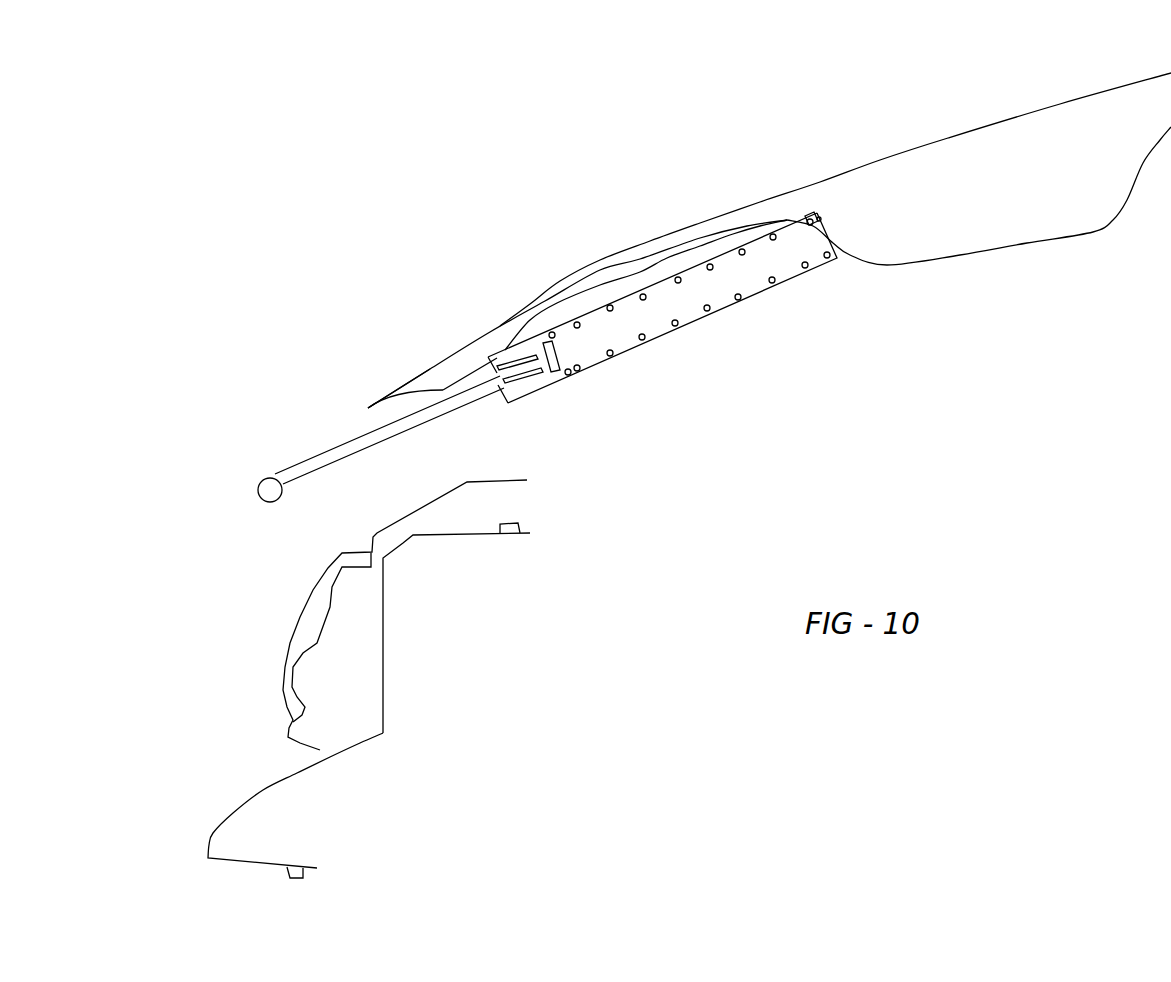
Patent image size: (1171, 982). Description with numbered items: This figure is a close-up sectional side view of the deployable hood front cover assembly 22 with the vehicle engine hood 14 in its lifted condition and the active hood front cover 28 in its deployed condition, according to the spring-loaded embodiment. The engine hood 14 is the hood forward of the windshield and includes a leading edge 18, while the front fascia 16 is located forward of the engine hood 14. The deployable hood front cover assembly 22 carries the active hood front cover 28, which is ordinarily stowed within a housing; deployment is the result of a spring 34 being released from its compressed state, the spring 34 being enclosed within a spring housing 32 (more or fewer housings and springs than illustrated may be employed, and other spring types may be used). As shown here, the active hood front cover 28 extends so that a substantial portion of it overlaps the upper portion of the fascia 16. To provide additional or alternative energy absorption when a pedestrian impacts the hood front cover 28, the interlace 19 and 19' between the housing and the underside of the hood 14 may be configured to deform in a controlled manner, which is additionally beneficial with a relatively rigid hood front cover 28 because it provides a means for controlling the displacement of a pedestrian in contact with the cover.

The engine hood 14 is at (950, 167).
The front fascia 16 is at (285, 667).
The leading edge 18 is at (427, 363).
The interlace 19 is at (503, 310).
The interlace 19' is at (787, 157).
The deployable hood front cover assembly 22 is at (627, 290).
The active hood front cover 28 is at (325, 448).
The spring housing 32 is at (637, 347).
The spring 34 is at (738, 297).